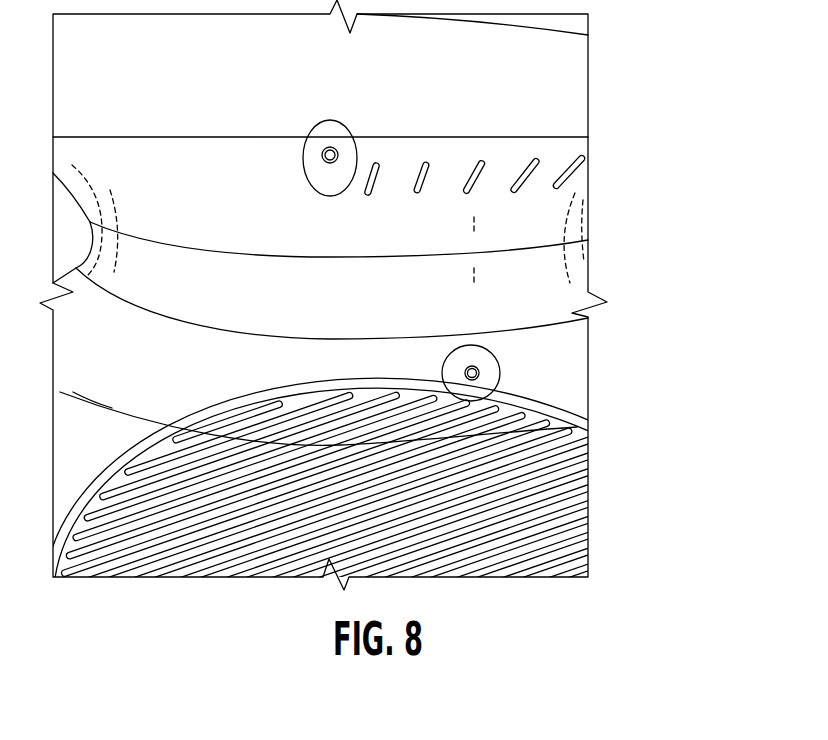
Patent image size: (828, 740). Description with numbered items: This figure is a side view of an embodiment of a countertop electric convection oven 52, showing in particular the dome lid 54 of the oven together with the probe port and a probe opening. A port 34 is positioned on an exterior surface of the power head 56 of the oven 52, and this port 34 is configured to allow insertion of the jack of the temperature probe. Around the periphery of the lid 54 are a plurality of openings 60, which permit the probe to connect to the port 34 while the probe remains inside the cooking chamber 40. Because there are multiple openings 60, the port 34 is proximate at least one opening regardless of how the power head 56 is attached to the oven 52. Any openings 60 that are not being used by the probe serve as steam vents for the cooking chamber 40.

The port 34 is at (340, 157).
The cooking chamber 40 is at (427, 493).
The countertop electric convection oven 52 is at (651, 182).
The dome lid 54 is at (153, 533).
The power head 56 is at (123, 103).
The openings 60 is at (478, 373).